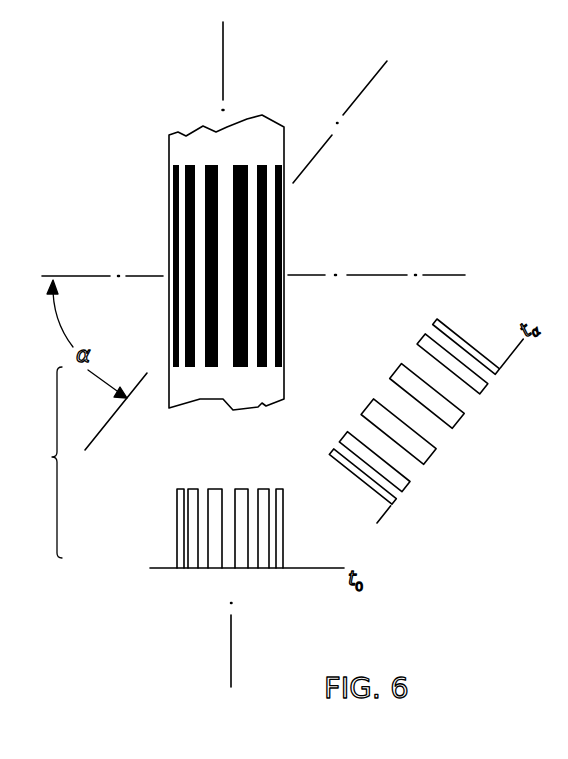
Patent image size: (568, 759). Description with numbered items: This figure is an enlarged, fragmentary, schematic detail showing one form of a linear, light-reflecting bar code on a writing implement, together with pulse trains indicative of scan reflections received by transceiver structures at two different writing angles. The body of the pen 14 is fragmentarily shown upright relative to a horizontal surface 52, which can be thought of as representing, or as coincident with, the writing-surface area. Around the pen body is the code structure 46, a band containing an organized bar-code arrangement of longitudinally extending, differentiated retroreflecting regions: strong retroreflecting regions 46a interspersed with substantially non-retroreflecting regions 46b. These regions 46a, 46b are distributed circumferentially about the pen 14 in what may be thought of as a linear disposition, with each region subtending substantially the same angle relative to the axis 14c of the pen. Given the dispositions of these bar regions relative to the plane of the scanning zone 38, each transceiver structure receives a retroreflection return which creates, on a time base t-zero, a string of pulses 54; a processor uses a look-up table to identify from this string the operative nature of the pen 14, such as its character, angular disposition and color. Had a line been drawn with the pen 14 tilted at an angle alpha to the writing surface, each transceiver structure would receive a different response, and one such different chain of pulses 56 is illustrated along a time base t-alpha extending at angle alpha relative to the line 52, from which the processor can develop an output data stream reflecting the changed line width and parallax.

The pen 14 is at (167, 163).
The axis 14c is at (223, 75).
The scanning zone 38 is at (135, 272).
The code structure 46 is at (264, 223).
The strong retroreflecting regions 46a is at (212, 165).
The non-retroreflecting regions 46b is at (225, 365).
The horizontal surface 52 is at (311, 567).
The string of pulses 54 is at (169, 514).
The chain of pulses 56 is at (484, 323).